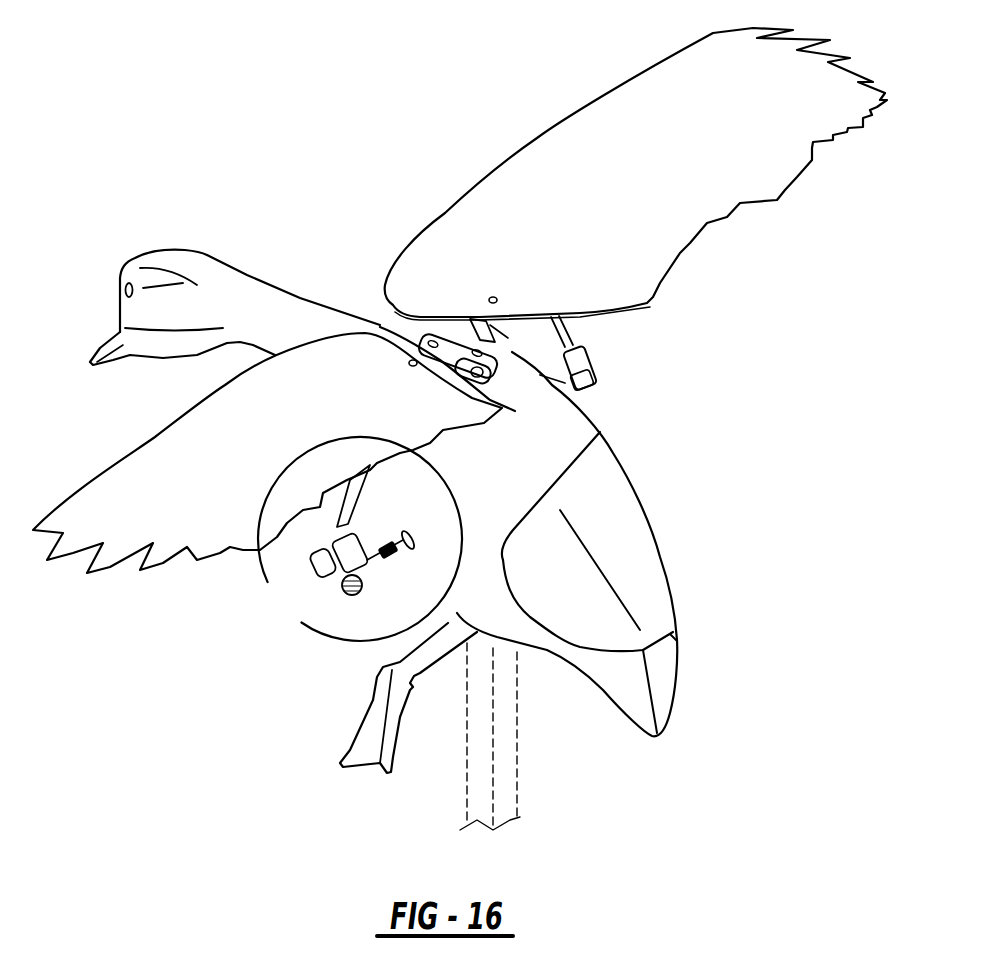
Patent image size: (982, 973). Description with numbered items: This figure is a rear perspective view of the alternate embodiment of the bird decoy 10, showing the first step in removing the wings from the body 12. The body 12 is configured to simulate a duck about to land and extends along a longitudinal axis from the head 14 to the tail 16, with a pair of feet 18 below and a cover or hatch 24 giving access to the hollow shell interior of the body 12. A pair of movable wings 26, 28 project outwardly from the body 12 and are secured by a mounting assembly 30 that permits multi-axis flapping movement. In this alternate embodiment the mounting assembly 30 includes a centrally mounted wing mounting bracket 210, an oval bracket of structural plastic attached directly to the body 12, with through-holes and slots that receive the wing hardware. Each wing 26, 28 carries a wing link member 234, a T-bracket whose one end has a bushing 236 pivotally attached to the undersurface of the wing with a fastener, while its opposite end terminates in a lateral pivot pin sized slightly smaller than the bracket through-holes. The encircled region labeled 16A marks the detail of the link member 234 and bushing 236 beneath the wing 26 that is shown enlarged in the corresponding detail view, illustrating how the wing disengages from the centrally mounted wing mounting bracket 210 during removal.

The bird decoy 10 is at (271, 169).
The body 12 is at (558, 418).
The head 14 is at (188, 262).
The tail 16 is at (678, 678).
The detail view circle 16A is at (313, 638).
The pair of feet 18 is at (367, 717).
The cover or hatch 24 is at (640, 533).
The movable wing 26 is at (167, 447).
The movable wing 28 is at (584, 111).
The mounting assembly 30 is at (376, 301).
The centrally mounted wing mounting bracket 210 is at (397, 330).
The wing link member 234 is at (540, 317).
The bushing 236 is at (477, 330).